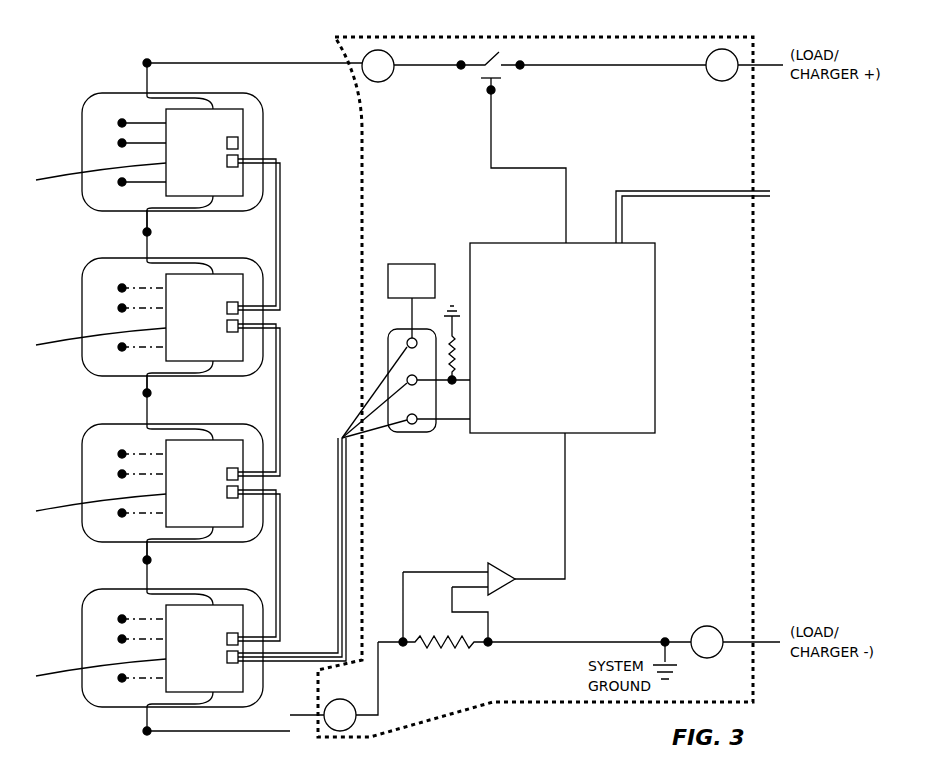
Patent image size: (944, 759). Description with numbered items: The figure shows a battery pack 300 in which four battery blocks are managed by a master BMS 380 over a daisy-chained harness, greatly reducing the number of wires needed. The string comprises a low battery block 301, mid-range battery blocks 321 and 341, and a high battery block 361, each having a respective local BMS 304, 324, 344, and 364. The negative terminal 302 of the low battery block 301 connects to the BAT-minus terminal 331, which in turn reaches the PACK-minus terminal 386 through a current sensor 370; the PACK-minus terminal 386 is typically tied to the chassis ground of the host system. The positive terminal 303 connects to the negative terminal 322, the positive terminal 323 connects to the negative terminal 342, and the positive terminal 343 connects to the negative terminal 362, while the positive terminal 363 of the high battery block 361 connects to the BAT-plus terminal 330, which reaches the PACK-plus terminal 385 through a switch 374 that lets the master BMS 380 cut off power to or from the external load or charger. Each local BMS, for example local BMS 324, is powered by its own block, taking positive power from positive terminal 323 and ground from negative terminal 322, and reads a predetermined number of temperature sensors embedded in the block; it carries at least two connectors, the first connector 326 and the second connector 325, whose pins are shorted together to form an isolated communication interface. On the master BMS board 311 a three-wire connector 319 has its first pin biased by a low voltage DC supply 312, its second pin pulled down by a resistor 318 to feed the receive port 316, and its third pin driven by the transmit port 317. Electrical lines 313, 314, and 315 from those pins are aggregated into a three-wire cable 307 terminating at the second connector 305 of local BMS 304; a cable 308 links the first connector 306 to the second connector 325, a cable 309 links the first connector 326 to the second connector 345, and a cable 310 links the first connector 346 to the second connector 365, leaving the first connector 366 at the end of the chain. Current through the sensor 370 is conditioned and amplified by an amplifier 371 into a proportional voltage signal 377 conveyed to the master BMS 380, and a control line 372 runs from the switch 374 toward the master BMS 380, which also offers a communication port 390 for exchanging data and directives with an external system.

The battery pack 300 is at (845, 348).
The low battery block 301 is at (82, 648).
The negative terminal of battery block 301 302 is at (142, 722).
The positive terminal of battery block 301 303 is at (142, 582).
The local BMS 304 is at (87, 673).
The C2 connector 305 is at (240, 653).
The C1 connector 306 is at (240, 636).
The 3-wire cable 307 is at (344, 512).
The 3-wire cable 308 is at (281, 580).
The 3-wire cable 309 is at (281, 336).
The 3-wire cable 310 is at (281, 205).
The master BMS board 311 is at (770, 427).
The low voltage DC standard supply 312 is at (422, 263).
The electrical line 313 is at (374, 374).
The electrical line 314 is at (368, 404).
The electrical line 315 is at (363, 420).
The receive port 316 is at (502, 376).
The transmit port 317 is at (502, 414).
The resistor 318 is at (455, 346).
The 3-wire connector 319 is at (432, 432).
The mid-range battery block 321 is at (82, 483).
The negative terminal of battery block 321 322 is at (142, 558).
The positive terminal of battery block 321 323 is at (147, 417).
The local BMS 324 is at (87, 508).
The C2 connector 325 is at (240, 488).
The C1 connector 326 is at (240, 471).
The BAT+ terminal 330 is at (361, 58).
The BAT- terminal 331 is at (372, 708).
The mid-range battery block 341 is at (82, 318).
The negative terminal of battery block 341 342 is at (147, 393).
The positive terminal of battery block 341 343 is at (147, 253).
The local BMS 344 is at (87, 342).
The C2 connector 345 is at (240, 322).
The C1 connector 346 is at (240, 305).
The high battery block 361 is at (82, 150).
The negative terminal of battery block 361 362 is at (147, 228).
The positive terminal of battery block 361 363 is at (146, 65).
The local BMS 364 is at (87, 176).
The C2 connector 365 is at (240, 157).
The C1 connector 366 is at (240, 140).
The current sensor 370 is at (455, 648).
The amplifier 371 is at (480, 560).
The contactor control line 372 is at (492, 148).
The switch 374 is at (508, 76).
The signal 377 is at (568, 514).
The master BMS 380 is at (502, 243).
The PACK+ terminal 385 is at (714, 85).
The PACK- terminal 386 is at (698, 624).
The communication port 390 is at (659, 185).